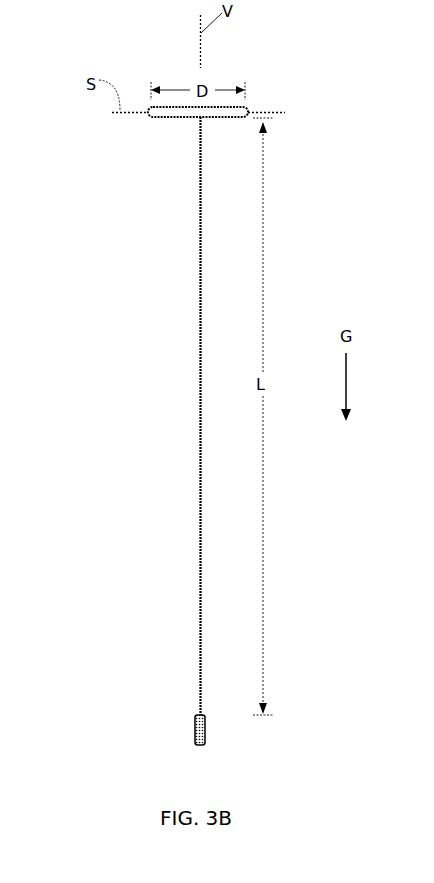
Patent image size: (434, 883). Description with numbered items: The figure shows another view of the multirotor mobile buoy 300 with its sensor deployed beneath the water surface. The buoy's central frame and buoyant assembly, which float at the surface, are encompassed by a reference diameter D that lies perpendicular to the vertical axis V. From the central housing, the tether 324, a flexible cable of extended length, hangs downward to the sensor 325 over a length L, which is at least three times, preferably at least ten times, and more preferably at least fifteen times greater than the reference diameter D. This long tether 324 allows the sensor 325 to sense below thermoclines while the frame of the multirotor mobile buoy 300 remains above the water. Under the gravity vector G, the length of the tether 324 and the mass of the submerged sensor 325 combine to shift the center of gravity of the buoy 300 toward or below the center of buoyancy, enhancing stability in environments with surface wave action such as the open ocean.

The multirotor mobile buoy 300 is at (154, 426).
The tether 324 is at (200, 383).
The sensor 325 is at (197, 723).